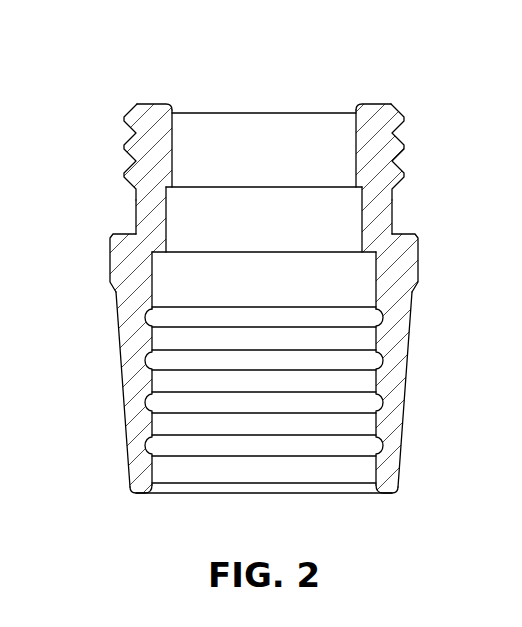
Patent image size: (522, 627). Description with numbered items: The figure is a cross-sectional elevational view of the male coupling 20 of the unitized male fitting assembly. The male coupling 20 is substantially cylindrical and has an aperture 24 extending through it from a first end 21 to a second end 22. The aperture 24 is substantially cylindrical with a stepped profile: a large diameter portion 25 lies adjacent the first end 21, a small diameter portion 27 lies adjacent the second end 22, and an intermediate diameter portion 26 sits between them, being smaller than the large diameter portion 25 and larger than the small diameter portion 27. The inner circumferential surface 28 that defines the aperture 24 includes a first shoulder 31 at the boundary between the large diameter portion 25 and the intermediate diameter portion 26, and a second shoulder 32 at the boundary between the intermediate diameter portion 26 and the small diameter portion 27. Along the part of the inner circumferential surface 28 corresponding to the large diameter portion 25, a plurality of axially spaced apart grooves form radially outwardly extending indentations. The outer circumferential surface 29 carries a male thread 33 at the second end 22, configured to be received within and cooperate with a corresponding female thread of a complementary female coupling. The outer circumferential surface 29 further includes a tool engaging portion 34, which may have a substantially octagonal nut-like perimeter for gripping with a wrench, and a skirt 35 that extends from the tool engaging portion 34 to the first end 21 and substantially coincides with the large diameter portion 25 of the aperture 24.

The male coupling 20 is at (86, 116).
The first end 21 is at (391, 494).
The second end 22 is at (373, 103).
The aperture 24 is at (279, 124).
The large diameter portion 25 is at (360, 279).
The intermediate diameter portion 26 is at (348, 218).
The small diameter portion 27 is at (338, 152).
The inner circumferential surface 28 is at (152, 470).
The outer circumferential surface 29 is at (121, 392).
The first shoulder 31 is at (153, 255).
The second shoulder 32 is at (166, 189).
The male thread 33 is at (118, 108).
The tool engaging portion 34 is at (108, 252).
The skirt 35 is at (128, 458).